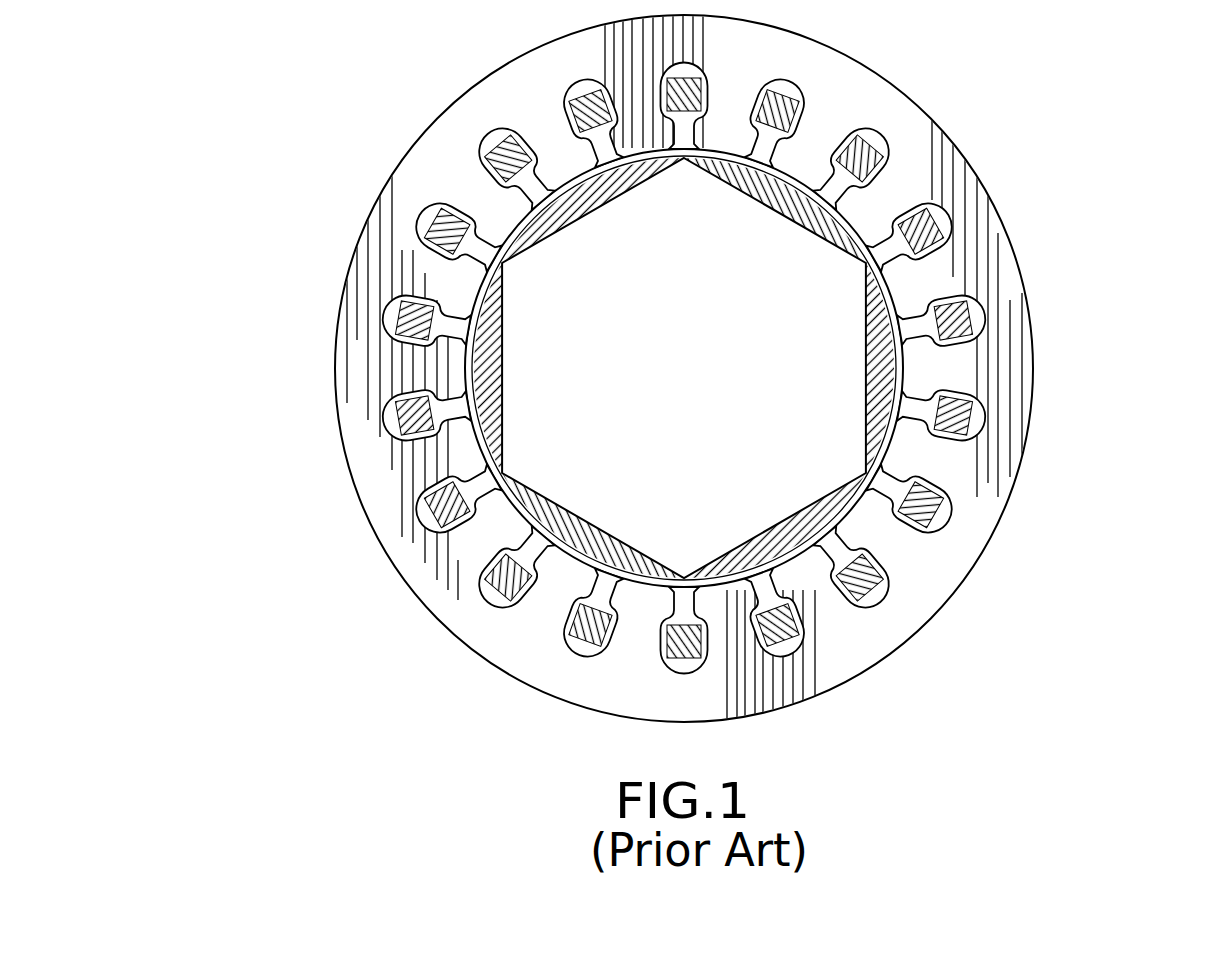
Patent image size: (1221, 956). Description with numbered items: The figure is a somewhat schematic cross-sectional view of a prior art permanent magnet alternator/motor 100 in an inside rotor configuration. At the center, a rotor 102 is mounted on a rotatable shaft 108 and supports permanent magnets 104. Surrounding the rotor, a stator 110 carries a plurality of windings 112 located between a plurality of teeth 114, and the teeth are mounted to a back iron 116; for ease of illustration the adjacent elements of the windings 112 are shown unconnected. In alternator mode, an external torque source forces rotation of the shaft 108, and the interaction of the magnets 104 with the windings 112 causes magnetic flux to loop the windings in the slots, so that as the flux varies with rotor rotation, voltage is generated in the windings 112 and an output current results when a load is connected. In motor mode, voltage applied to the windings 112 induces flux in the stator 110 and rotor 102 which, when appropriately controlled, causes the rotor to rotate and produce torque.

The prior art assembly 100 is at (288, 597).
The rotor 102 is at (893, 458).
The permanent magnets 104 is at (856, 216).
The rotatable shaft 108 is at (542, 423).
The stator 110 is at (438, 172).
The windings 112 is at (392, 318).
The teeth 114 is at (923, 368).
The back iron 116 is at (1018, 412).